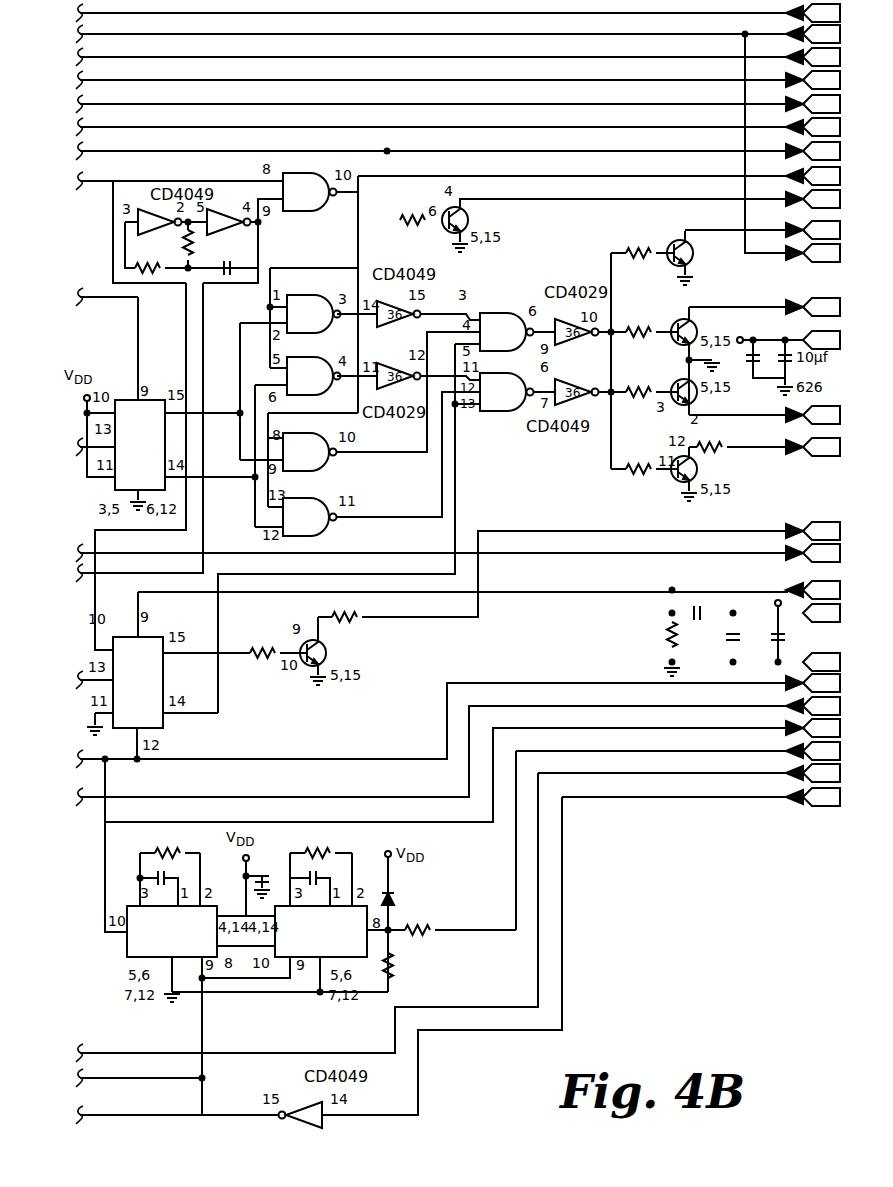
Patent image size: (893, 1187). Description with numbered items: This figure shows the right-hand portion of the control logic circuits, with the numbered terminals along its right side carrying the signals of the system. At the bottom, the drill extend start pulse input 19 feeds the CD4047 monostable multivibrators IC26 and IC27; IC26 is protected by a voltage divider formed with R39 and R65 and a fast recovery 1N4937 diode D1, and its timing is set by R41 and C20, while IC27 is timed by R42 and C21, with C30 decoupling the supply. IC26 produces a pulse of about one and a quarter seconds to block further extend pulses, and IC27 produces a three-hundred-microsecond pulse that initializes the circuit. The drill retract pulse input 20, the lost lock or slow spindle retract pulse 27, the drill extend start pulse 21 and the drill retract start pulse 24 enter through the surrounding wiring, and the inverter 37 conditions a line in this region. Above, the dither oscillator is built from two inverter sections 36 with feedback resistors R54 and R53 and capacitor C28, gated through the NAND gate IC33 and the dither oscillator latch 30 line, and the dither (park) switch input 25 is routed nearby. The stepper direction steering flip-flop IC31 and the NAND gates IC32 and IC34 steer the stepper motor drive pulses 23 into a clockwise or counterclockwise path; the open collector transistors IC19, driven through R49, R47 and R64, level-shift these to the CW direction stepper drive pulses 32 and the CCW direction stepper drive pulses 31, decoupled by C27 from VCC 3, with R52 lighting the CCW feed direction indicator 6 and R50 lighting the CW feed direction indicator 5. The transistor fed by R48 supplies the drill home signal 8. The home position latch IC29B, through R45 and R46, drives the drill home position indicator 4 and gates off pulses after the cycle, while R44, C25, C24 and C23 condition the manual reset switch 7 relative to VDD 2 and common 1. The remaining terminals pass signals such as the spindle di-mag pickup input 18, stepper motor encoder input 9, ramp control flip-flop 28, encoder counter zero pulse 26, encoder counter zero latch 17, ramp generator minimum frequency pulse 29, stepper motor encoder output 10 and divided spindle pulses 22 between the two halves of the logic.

The resistor 6.80K R54 is at (140, 268).
The resistor 68K R53 is at (186, 270).
The capacitor .04uf C28 is at (230, 264).
The dither oscillator inverter section 36 is at (194, 222).
The CD4011 NAND gate IC33 is at (303, 217).
The CD4011 NAND gates IC32 is at (312, 415).
The CD4023 NAND gates IC34 is at (507, 362).
The stepper direction steering flip-flop IC31 is at (140, 445).
The resistor 20K R48 is at (411, 220).
The resistor 20K R50 is at (638, 249).
The resistor 20K R49 is at (643, 327).
The resistor 20K R47 is at (640, 413).
The resistor 20K R64 is at (638, 472).
The open collector transistors IC19 is at (655, 400).
The resistor 590 ohm R52 is at (715, 451).
The capacitor .1uf C27 is at (752, 377).
The home position latch IC29B is at (138, 682).
The resistor 20K R45 is at (256, 650).
The resistor 590 ohm R46 is at (349, 615).
The resistor 47.5K R44 is at (642, 643).
The capacitor 1uf C25 is at (704, 594).
The capacitor .1uf C24 is at (720, 648).
The capacitor 47uf C23 is at (763, 648).
The monostable multivibrator IC27 is at (172, 931).
The monostable multivibrator IC26 is at (321, 931).
The resistor 12.1K R42 is at (172, 842).
The capacitor .01uf C21 is at (155, 873).
The capacitor .1uf C30 is at (267, 861).
The resistor 499K R41 is at (334, 842).
The capacitor 1uf C20 is at (318, 873).
The diode 1N4937 D1 is at (418, 887).
The resistor 10K R39 is at (422, 928).
The resistor 8.06K R65 is at (412, 974).
The CD4049 inverter 37 is at (301, 1115).
The spindle di-mag pickup input 18 is at (813, 13).
The stepper motor encoder input 9 is at (813, 34).
The ramp control flip-flop 28 is at (813, 57).
The encoder counter zero pulse 26 is at (813, 80).
The encoder counter zero latch 17 is at (813, 104).
The ramp generator FOUT = FMIN pulse 29 is at (813, 127).
The dither oscillator latch 30 is at (813, 151).
The stepper motor drive pulses 23 is at (813, 176).
The drill home signal 8 is at (813, 199).
The CW feed direction indicator 5 is at (813, 230).
The stepper motor encoder output 10 is at (813, 253).
The CW direction stepper drive pulses 32 is at (813, 307).
The VCC 3 is at (821, 340).
The CCW direction stepper drive pulses 31 is at (813, 415).
The CCW feed direction indicator 6 is at (813, 447).
The drill home position indicator 4 is at (813, 531).
The divided spindle pulses 22 is at (813, 553).
The manual reset switch 7 is at (813, 590).
The VDD 2 is at (821, 613).
The common 1 is at (821, 662).
The drill extend start pulse 21 is at (813, 683).
The dither (park) switch input 25 is at (813, 706).
The drill retract start pulse 24 is at (813, 728).
The drill extend start pulse input 19 is at (813, 751).
The drill retract pulse input 20 is at (813, 773).
The lost lock or slow spindle retract pulse 27 is at (813, 797).